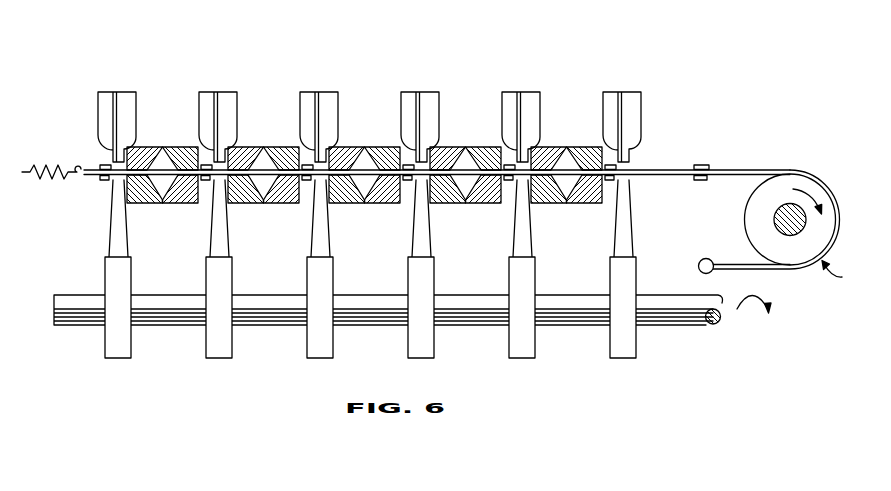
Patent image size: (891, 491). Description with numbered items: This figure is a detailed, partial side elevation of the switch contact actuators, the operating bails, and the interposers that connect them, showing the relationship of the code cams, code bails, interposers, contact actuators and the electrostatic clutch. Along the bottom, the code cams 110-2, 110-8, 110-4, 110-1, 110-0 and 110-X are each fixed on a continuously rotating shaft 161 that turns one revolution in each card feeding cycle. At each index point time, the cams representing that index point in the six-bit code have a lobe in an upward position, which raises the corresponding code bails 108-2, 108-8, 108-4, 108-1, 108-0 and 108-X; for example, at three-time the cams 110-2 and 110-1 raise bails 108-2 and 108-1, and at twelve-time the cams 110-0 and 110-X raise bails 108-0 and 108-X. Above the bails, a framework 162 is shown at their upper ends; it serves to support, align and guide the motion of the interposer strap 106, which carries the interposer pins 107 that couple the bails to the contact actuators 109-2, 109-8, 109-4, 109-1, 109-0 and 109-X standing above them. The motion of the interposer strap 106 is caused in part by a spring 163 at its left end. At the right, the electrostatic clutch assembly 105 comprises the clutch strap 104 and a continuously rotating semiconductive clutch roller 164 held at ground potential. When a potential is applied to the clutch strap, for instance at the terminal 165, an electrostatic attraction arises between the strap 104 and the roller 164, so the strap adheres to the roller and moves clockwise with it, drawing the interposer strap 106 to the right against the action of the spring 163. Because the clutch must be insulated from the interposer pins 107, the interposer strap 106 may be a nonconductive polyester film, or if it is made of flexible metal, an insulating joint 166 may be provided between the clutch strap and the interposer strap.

The clutch strap 104 is at (839, 227).
The electrostatic clutch assembly 105 is at (843, 274).
The interposer strap 106 is at (657, 168).
The interposer pins 107 is at (205, 181).
The code bail 108-2 is at (112, 244).
The code bail 108-8 is at (213, 244).
The code bail 108-4 is at (314, 244).
The code bail 108-1 is at (415, 244).
The code bail 108-0 is at (516, 244).
The code bail 108-X is at (617, 244).
The contact actuator 109-2 is at (118, 93).
The contact actuator 109-8 is at (219, 93).
The contact actuator 109-4 is at (320, 93).
The contact actuator 109-1 is at (421, 93).
The contact actuator 109-0 is at (522, 93).
The contact actuator 109-X is at (623, 93).
The code cam 110-2 is at (116, 356).
The code cam 110-8 is at (217, 356).
The code cam 110-4 is at (318, 356).
The code cam 110-1 is at (419, 356).
The code cam 110-0 is at (520, 356).
The code cam 110-X is at (621, 356).
The continuously rotating shaft 161 is at (668, 321).
The framework 162 is at (156, 148).
The spring 163 is at (35, 170).
The semiconductive clutch roller 164 is at (744, 219).
The terminal 165 is at (701, 261).
The insulating joint 166 is at (703, 165).